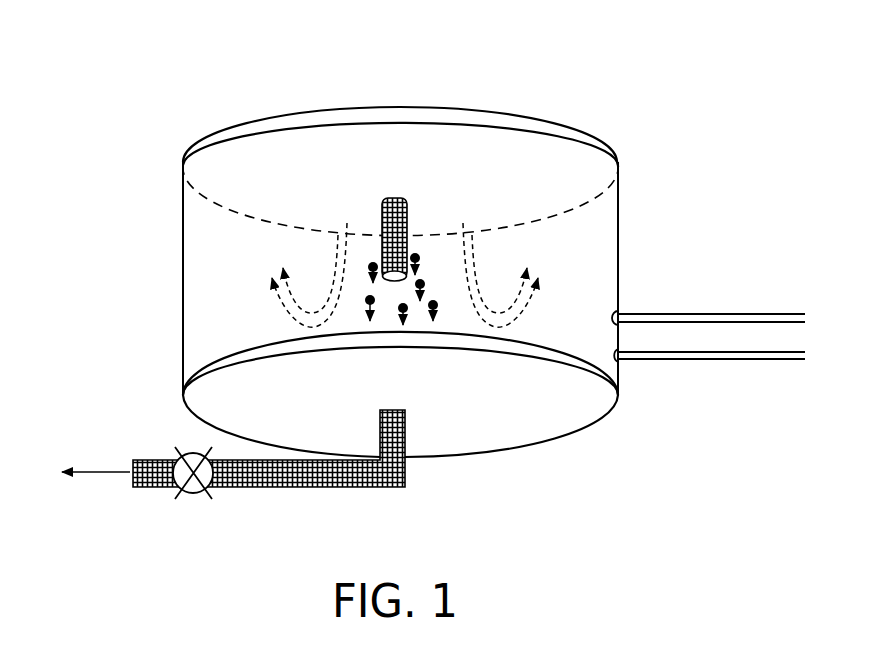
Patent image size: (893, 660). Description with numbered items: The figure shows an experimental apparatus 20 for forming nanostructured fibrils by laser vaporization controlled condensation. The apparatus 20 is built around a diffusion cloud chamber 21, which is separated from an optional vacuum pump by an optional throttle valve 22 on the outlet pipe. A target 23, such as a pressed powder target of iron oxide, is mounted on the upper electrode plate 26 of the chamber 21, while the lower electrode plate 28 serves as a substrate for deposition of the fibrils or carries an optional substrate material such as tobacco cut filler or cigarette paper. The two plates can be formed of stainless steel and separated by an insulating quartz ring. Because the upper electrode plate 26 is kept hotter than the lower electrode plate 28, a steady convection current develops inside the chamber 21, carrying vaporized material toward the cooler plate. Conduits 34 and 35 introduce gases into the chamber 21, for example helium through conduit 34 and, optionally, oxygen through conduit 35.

The apparatus 20 is at (231, 70).
The diffusion cloud chamber 21 is at (593, 280).
The throttle valve 22 is at (233, 468).
The target 23 is at (410, 218).
The upper electrode plate 26 is at (557, 133).
The lower electrode plate 28 is at (562, 422).
The conduit 34 is at (727, 319).
The conduit 35 is at (728, 356).